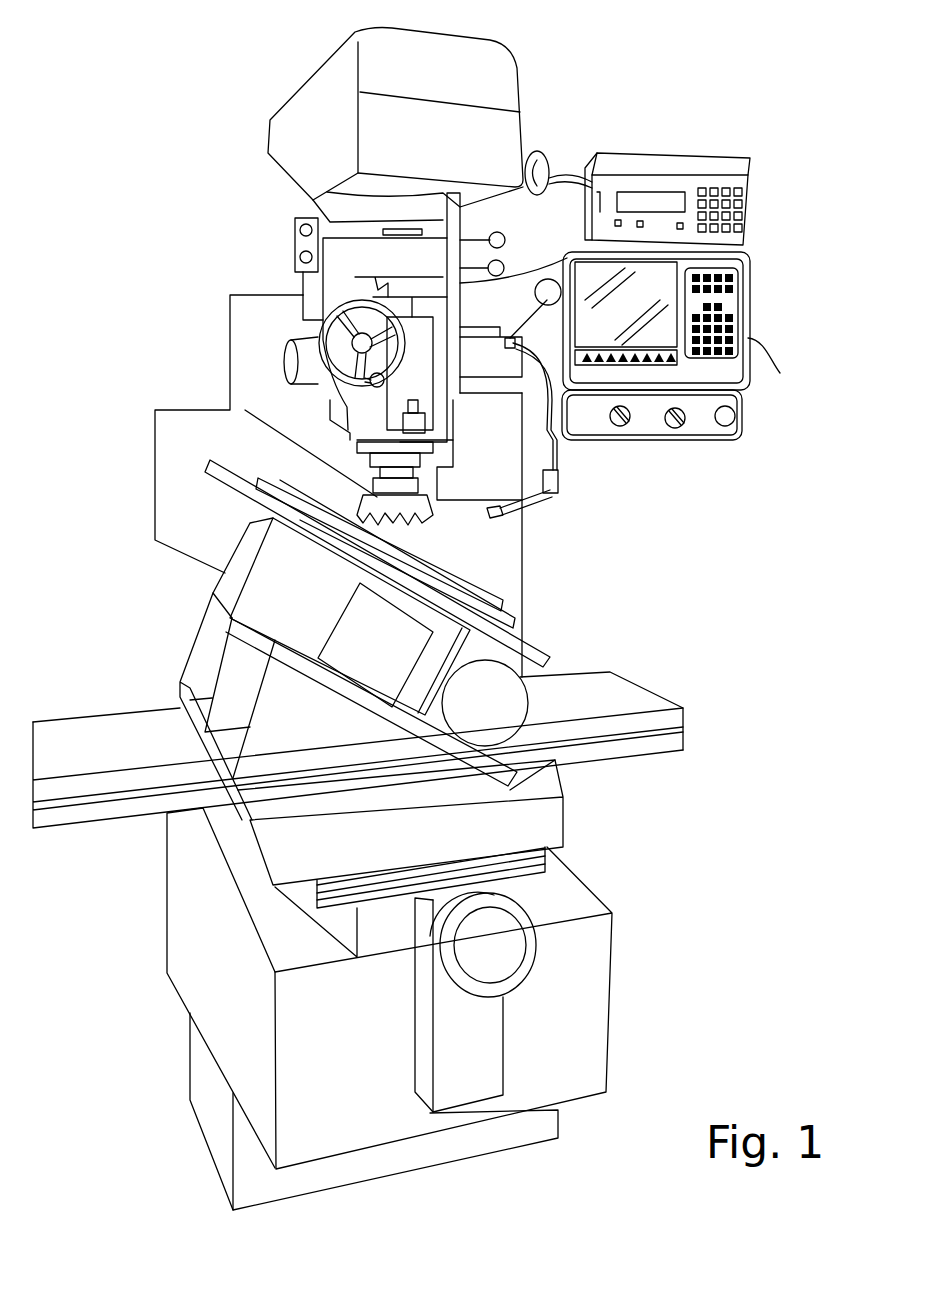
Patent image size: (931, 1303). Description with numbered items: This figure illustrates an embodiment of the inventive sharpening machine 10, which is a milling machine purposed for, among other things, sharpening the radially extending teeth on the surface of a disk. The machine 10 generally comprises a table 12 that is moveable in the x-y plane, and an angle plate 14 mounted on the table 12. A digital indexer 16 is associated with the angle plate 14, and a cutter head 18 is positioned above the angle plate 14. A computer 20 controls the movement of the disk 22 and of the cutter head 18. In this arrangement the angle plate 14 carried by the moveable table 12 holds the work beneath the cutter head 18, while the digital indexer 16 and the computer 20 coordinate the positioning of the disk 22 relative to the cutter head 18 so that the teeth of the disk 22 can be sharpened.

The sharpening machine 10 is at (128, 228).
The table 12 is at (608, 857).
The angle plate 14 is at (558, 648).
The digital indexer 16 is at (270, 517).
The cutter head 18 is at (437, 543).
The computer 20 is at (752, 369).
The disk 22 is at (503, 610).